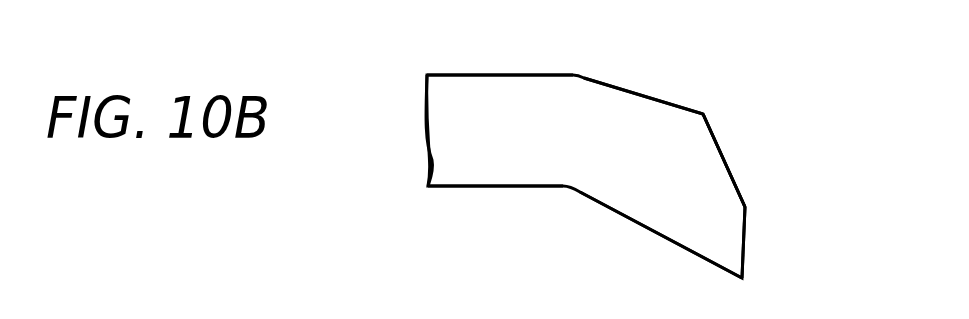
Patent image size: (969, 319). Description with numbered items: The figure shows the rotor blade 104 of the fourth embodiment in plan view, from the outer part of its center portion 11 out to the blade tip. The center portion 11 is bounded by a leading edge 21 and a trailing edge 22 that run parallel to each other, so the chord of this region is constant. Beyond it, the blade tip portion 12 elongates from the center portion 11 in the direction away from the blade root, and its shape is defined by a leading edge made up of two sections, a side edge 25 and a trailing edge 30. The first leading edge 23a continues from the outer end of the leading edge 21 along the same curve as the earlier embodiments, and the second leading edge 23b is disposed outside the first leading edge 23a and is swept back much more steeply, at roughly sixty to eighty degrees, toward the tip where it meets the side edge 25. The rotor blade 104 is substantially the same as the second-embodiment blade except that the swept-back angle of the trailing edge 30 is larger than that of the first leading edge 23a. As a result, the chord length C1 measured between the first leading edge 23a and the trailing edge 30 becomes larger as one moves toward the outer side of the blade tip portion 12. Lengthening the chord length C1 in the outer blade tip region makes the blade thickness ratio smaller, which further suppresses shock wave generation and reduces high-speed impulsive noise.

The rotor blade 104 is at (633, 60).
The center portion 11 is at (436, 128).
The leading edge 21 is at (458, 73).
The trailing edge 22 is at (463, 190).
The chord length C1 is at (520, 75).
The first leading edge 23a is at (676, 100).
The blade tip portion 12 is at (705, 133).
The second leading edge 23b is at (736, 179).
The side edge 25 is at (746, 249).
The trailing edge 30 is at (678, 242).